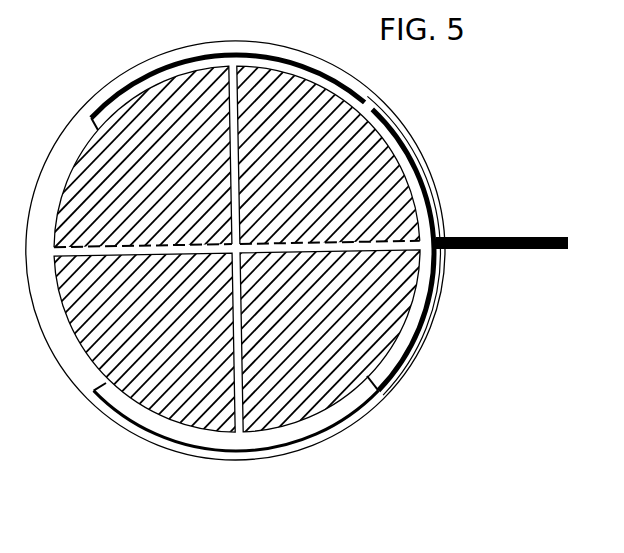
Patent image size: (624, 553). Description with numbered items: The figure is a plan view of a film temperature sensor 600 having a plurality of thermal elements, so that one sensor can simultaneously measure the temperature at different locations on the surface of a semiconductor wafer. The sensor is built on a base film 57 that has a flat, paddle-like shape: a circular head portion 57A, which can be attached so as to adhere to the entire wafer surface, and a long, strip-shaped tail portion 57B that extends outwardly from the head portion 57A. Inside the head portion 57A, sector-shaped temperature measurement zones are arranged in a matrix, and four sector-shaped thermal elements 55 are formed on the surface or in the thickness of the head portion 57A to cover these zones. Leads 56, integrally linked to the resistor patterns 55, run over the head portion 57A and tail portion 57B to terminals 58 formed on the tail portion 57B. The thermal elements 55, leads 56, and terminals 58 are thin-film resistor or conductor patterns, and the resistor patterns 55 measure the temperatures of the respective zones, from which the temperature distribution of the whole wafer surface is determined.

The film temperature sensor 600 is at (431, 106).
The base film 57 is at (62, 134).
The head portion 57A is at (436, 466).
The tail portion 57B is at (459, 261).
The thermal element 55 is at (415, 151).
The lead 56 is at (499, 234).
The terminal 58 is at (566, 236).